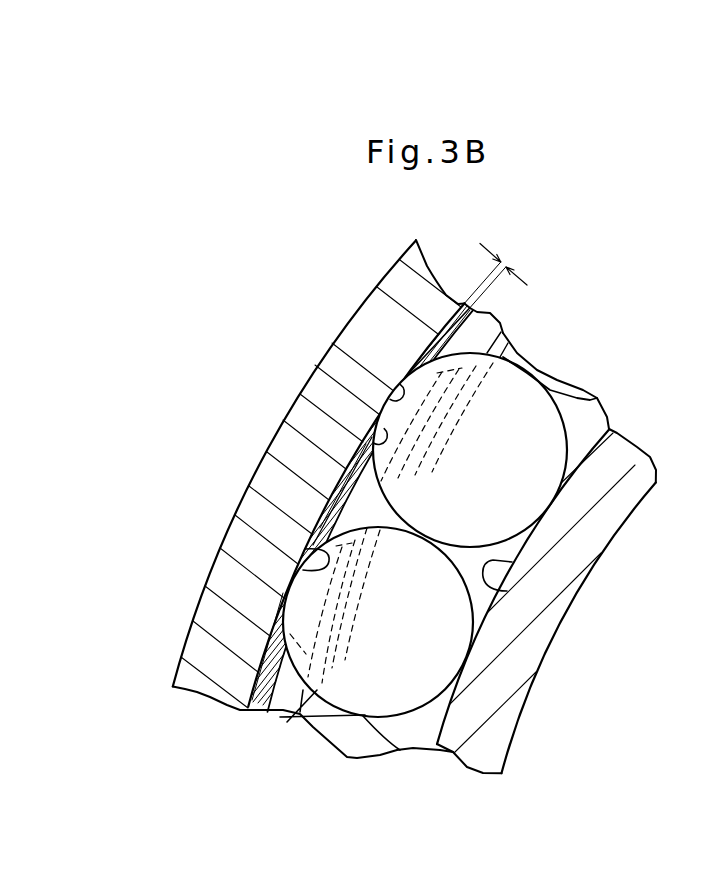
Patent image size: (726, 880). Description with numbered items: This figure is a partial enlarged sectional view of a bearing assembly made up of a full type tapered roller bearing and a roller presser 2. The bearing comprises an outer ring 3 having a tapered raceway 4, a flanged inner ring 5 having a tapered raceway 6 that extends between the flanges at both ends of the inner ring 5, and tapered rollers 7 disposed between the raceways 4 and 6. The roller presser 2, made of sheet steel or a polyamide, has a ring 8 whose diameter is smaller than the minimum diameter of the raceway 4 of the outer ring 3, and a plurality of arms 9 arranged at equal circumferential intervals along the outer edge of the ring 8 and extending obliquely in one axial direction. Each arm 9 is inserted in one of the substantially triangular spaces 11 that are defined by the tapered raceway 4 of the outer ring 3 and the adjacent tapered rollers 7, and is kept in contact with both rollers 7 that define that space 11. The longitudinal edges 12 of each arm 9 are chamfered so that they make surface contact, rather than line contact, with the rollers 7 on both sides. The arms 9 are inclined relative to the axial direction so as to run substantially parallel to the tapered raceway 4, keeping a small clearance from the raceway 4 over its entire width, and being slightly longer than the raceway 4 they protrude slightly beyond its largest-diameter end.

The roller presser 2 is at (250, 652).
The outer ring 3 is at (380, 300).
The tapered raceway 4 is at (402, 378).
The flanged inner ring 5 is at (495, 683).
The tapered raceway 6 is at (487, 582).
The tapered rollers 7 is at (507, 417).
The ring 8 is at (288, 714).
The arms 9 is at (335, 508).
The spaces 11 is at (325, 505).
The longitudinal edges 12 is at (390, 412).